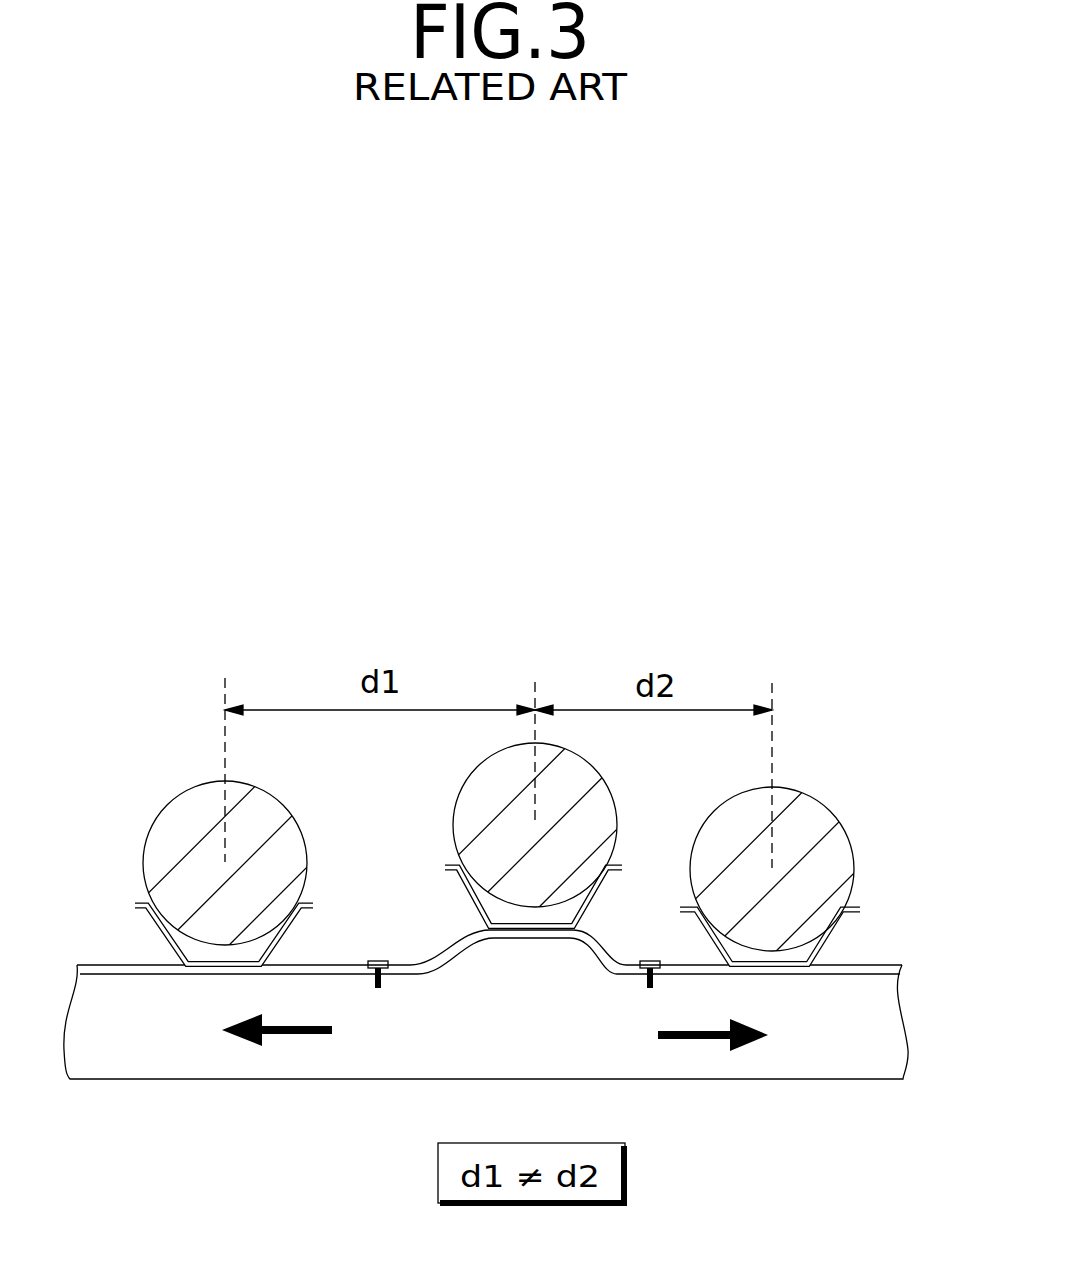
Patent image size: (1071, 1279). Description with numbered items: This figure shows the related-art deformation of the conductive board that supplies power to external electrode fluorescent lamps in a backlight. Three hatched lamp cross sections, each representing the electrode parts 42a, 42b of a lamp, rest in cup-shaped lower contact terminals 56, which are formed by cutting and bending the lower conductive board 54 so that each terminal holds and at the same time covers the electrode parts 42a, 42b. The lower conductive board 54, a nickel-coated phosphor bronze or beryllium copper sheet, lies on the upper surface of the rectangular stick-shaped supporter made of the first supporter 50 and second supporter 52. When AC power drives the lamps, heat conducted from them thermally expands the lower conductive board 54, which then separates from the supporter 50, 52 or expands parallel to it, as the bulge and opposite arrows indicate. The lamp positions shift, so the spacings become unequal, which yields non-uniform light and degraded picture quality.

The electrode part 42a is at (480, 842).
The electrode part 42b is at (177, 815).
The lower contact terminal 56 is at (148, 901).
The lower conductive board 54 is at (80, 962).
The first supporter 50 is at (486, 1053).
The second supporter 52 is at (207, 1067).